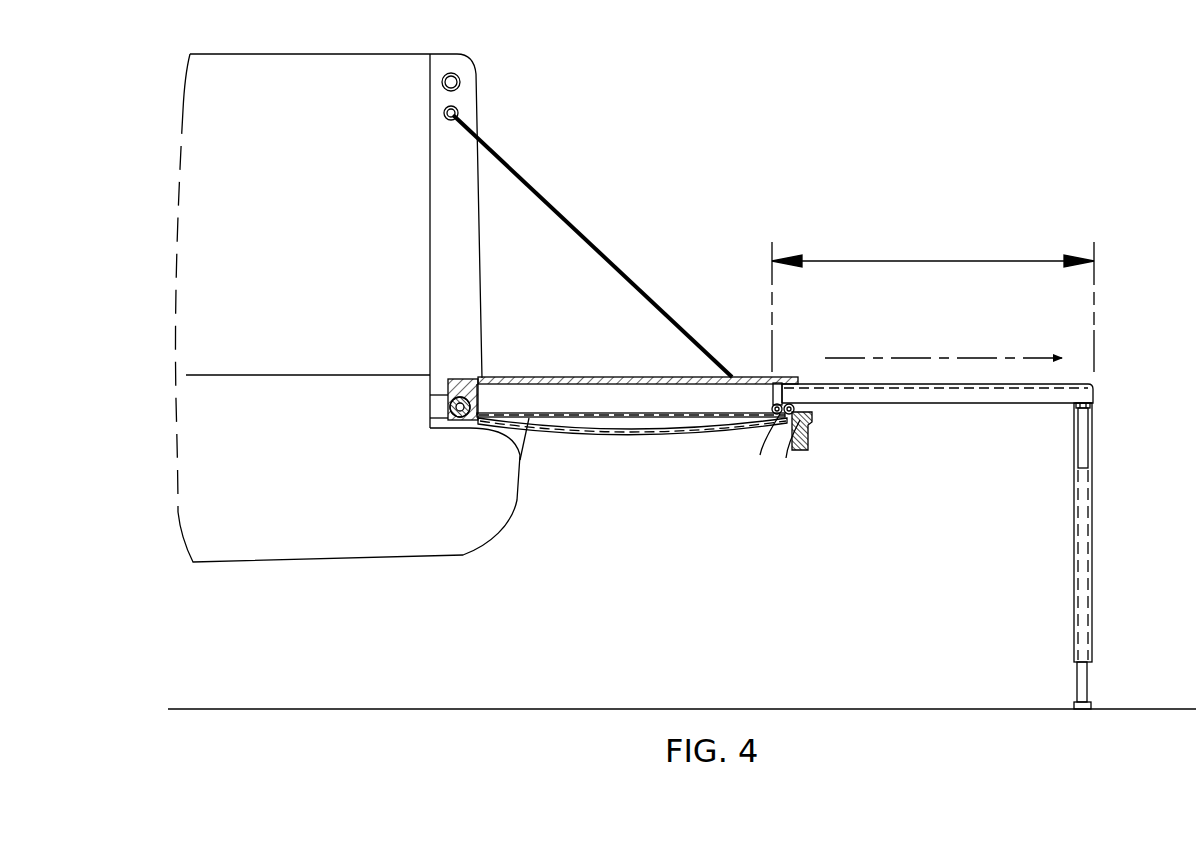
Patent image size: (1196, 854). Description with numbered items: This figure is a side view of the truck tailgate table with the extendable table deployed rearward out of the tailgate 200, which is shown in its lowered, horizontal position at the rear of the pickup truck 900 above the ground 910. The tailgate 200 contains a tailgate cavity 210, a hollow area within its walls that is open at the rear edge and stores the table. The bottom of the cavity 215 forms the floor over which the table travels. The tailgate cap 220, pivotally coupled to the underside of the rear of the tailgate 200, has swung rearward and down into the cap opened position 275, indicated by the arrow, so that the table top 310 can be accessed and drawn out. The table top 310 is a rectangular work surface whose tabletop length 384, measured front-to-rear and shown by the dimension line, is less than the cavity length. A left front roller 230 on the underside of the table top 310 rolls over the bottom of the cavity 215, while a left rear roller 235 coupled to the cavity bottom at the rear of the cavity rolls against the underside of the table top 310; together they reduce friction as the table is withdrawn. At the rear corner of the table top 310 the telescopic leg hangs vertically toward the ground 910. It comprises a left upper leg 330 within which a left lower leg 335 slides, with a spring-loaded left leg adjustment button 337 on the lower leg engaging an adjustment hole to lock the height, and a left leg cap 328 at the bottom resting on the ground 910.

The tailgate 200 is at (520, 465).
The tailgate cavity 210 is at (628, 430).
The bottom of the cavity 215 is at (558, 412).
The tailgate cap 220 is at (795, 450).
The left front roller 230 is at (775, 416).
The left rear roller 235 is at (783, 414).
The cap opened position 275 is at (830, 436).
The table top 310 is at (1013, 395).
The left leg cap 328 is at (1075, 703).
The left upper leg 330 is at (1092, 448).
The left lower leg 335 is at (1087, 690).
The left leg adjustment button 337 is at (1092, 590).
The tabletop length 384 is at (932, 260).
The pickup truck 900 is at (315, 512).
The ground 910 is at (517, 708).